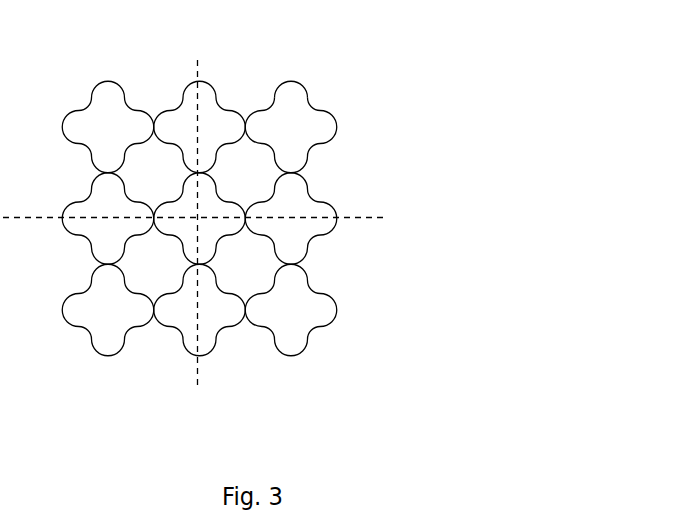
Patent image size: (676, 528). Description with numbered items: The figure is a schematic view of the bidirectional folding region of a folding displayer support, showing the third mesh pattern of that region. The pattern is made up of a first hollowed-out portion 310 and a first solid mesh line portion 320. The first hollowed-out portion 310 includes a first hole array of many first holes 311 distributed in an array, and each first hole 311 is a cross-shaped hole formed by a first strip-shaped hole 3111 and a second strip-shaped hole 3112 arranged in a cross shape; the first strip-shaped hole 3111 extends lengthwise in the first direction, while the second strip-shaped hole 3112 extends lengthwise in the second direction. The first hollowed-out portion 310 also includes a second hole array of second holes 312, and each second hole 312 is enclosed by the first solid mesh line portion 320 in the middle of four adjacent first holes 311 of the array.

The first hollowed-out portion 310 is at (328, 197).
The first hole 311 is at (378, 106).
The first strip-shaped hole 3111 is at (328, 128).
The second strip-shaped hole 3112 is at (298, 88).
The second hole 312 is at (252, 167).
The first solid mesh line portion 320 is at (212, 88).